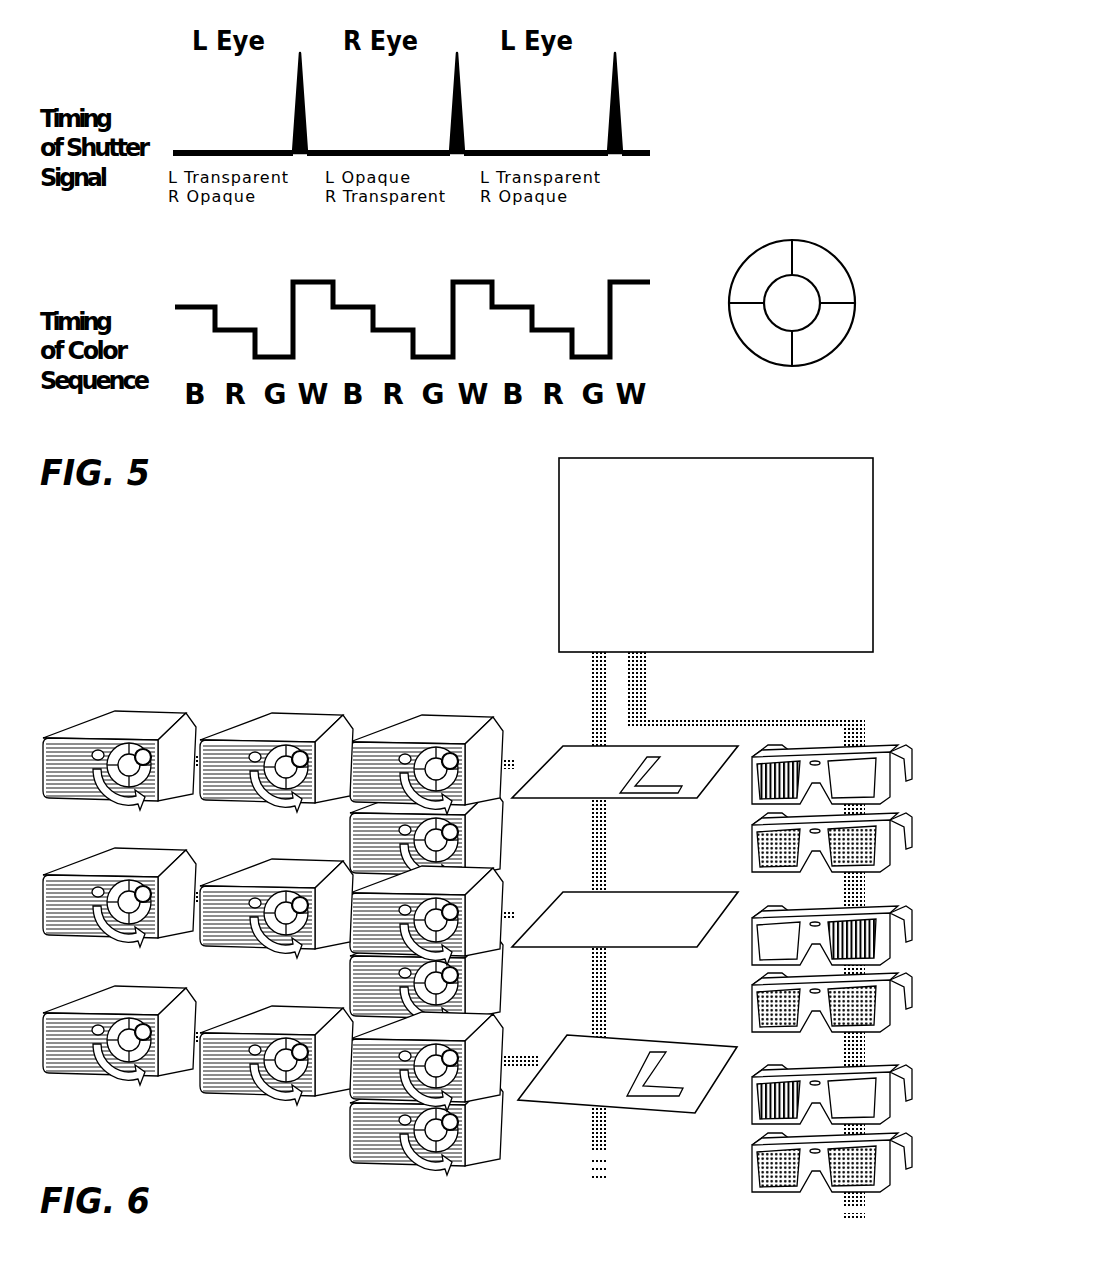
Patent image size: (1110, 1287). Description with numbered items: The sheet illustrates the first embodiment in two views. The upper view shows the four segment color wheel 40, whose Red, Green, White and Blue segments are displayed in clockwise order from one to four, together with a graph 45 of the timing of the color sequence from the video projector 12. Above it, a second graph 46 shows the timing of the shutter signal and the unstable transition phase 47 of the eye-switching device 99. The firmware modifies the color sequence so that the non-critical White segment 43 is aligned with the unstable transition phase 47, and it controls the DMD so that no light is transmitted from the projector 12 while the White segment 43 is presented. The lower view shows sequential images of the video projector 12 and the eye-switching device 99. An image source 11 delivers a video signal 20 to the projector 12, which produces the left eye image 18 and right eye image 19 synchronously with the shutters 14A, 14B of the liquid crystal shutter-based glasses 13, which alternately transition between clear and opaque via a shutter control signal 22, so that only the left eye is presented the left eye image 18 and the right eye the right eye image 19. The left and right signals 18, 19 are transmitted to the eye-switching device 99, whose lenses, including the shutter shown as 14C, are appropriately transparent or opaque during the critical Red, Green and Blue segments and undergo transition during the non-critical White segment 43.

In FIG. 6, the image source 11 is at (548, 479).
In FIG. 6, the video projector 12 is at (40, 678).
In FIG. 6, the liquid crystal shutter-based glasses 13 is at (891, 752).
In FIG. 6, the shutter 14A is at (786, 772).
In FIG. 6, the shutter 14B is at (850, 780).
In FIG. 6, the lens shutter 14C is at (852, 853).
In FIG. 6, the left eye image 18 is at (580, 748).
In FIG. 6, the right eye image 19 is at (580, 893).
In FIG. 6, the video signal 20 is at (592, 690).
In FIG. 6, the shutter control signal 22 is at (640, 690).
In FIG. 5, the four segment color wheel 40 is at (792, 274).
In FIG. 5, the White segment 43 is at (836, 335).
In FIG. 5, the timing of color sequence graph 45 is at (145, 295).
In FIG. 5, the shutter signal timing graph 46 is at (370, 91).
In FIG. 5, the unstable transition phase 47 is at (305, 94).
In FIG. 6, the eye-switching device 99 is at (837, 925).